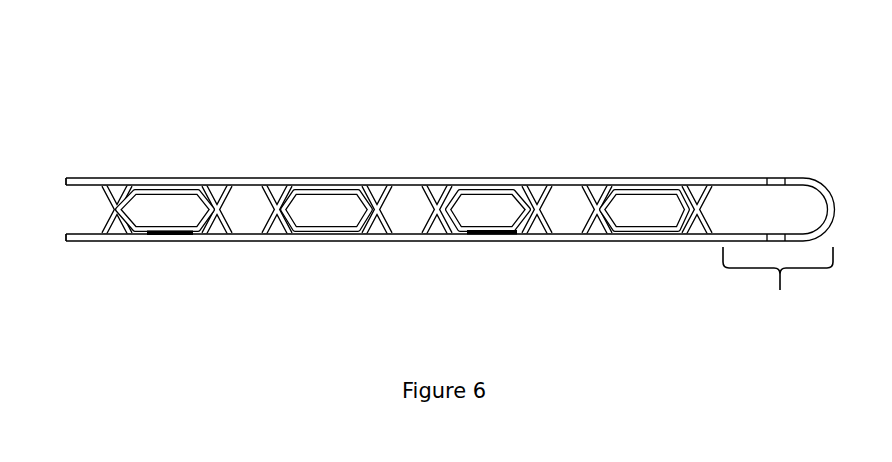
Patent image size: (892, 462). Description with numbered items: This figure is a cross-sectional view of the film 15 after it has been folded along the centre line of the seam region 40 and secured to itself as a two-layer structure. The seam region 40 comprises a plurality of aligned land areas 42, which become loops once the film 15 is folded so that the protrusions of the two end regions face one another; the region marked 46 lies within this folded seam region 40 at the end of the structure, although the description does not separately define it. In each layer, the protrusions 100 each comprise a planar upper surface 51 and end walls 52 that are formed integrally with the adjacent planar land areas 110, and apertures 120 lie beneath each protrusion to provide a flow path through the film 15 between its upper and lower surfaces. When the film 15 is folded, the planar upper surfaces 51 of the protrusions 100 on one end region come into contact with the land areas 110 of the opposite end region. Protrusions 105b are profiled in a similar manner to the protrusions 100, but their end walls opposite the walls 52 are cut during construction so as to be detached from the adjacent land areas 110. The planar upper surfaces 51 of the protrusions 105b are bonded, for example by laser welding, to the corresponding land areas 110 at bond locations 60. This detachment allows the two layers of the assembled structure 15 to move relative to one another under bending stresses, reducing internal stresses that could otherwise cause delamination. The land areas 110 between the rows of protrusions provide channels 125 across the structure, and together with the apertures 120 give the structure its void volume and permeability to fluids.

The film 15 is at (438, 172).
The protrusions 100 is at (173, 178).
The land areas 110 is at (627, 236).
The apertures 120 is at (328, 207).
The channels 125 is at (402, 207).
The upper surface 51 is at (648, 191).
The end walls 52 is at (107, 188).
The protrusions 105b is at (119, 229).
The bond locations 60 is at (167, 234).
The land areas 42 is at (823, 190).
The end chamber 46 is at (778, 209).
The seam region 40 is at (778, 282).